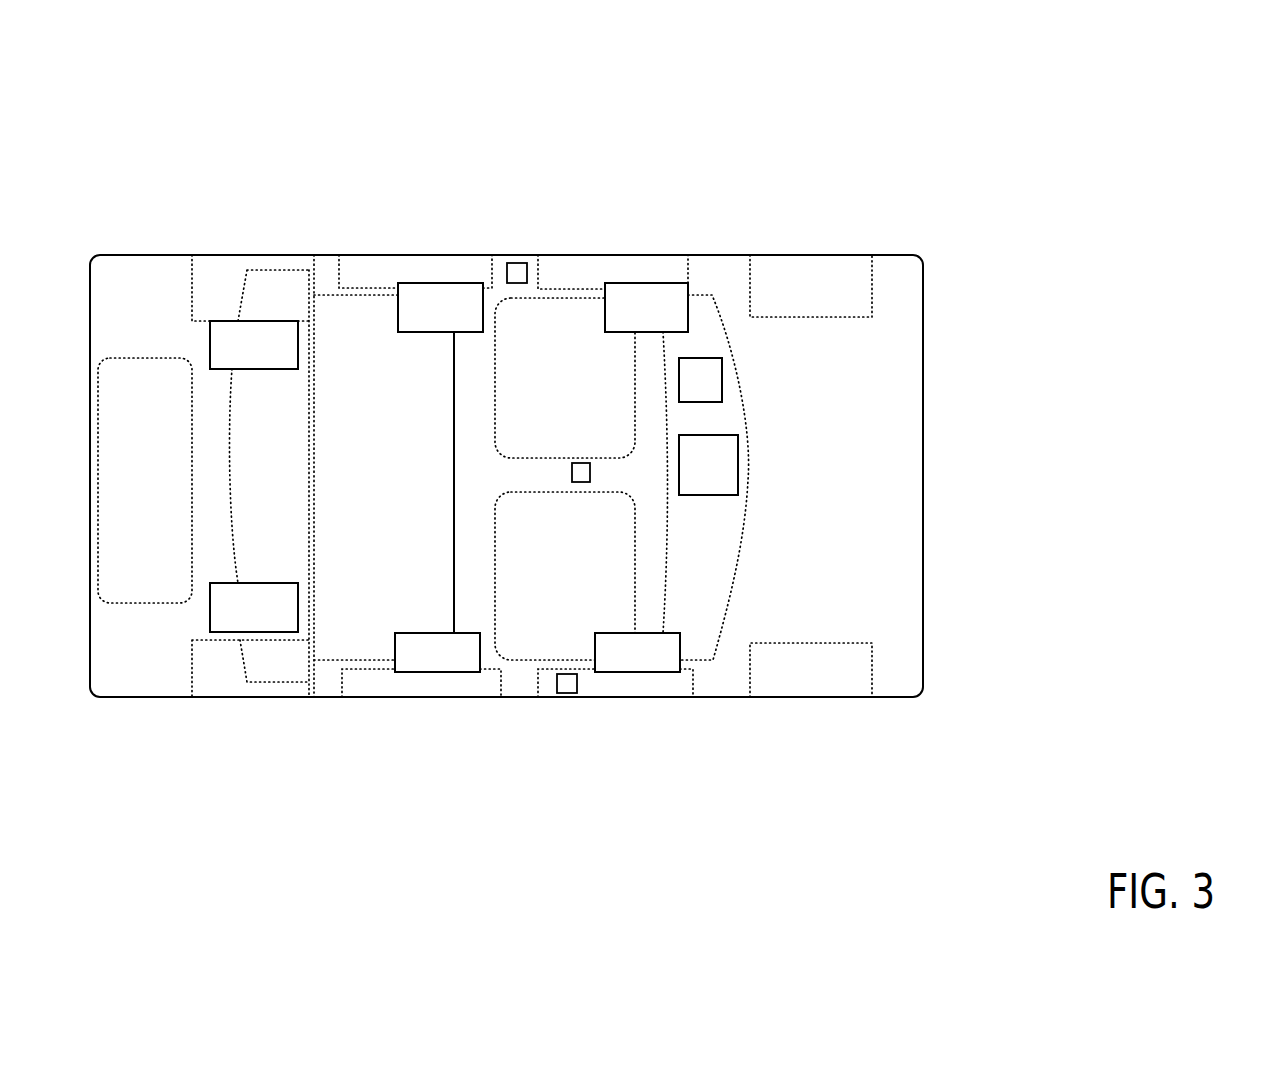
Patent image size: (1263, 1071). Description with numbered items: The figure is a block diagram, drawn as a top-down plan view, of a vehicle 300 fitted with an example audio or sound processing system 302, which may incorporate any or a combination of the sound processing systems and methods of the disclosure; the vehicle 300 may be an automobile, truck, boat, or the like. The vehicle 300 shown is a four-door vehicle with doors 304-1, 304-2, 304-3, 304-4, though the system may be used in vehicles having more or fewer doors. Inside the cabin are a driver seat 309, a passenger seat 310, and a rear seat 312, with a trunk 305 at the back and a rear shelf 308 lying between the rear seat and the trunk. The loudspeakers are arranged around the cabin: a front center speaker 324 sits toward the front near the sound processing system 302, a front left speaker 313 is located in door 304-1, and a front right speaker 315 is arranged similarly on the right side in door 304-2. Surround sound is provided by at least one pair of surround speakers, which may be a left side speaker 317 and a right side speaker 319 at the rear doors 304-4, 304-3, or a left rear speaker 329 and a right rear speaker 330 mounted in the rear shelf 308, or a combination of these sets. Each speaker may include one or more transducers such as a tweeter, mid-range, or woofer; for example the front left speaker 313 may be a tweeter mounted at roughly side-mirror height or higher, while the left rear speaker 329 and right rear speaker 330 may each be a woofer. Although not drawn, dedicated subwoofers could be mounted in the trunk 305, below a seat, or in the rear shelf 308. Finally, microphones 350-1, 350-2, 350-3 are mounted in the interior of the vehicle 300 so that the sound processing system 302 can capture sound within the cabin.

The vehicle 300 is at (1028, 62).
The audio or sound processing system 302 is at (722, 396).
The door 304-1 is at (660, 255).
The door 304-2 is at (679, 697).
The door 304-3 is at (428, 697).
The door 304-4 is at (397, 255).
The trunk 305 is at (131, 532).
The rear shelf 308 is at (241, 484).
The driver seat 309 is at (548, 428).
The passenger seat 310 is at (546, 632).
The rear seat 312 is at (358, 479).
The front left speaker 313 is at (629, 318).
The front right speaker 315 is at (620, 664).
The left side speaker 317 is at (423, 318).
The right side speaker 319 is at (420, 664).
The front center speaker 324 is at (691, 474).
The left rear speaker 329 is at (237, 356).
The right rear speaker 330 is at (237, 618).
The microphone 350-1 is at (521, 263).
The microphone 350-2 is at (567, 693).
The microphone 350-3 is at (590, 468).